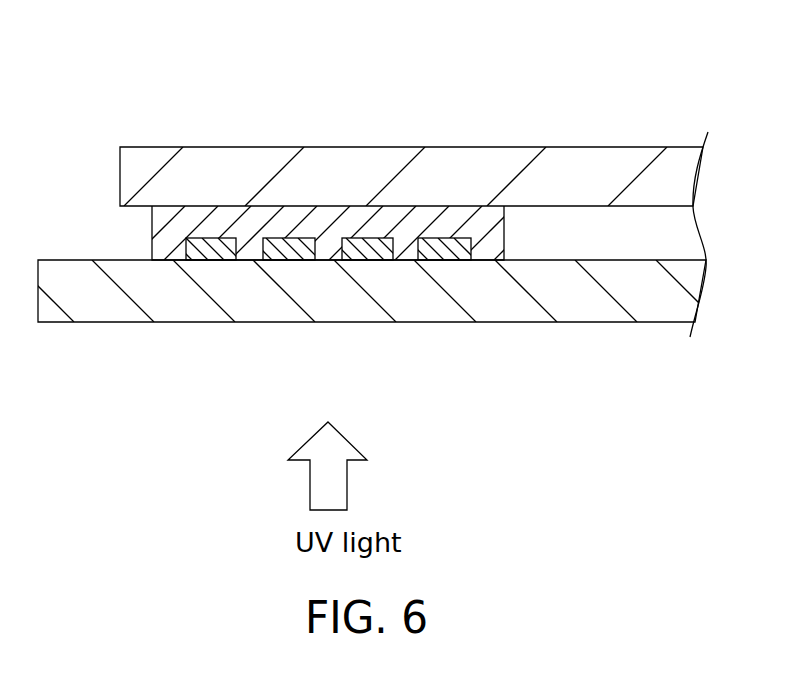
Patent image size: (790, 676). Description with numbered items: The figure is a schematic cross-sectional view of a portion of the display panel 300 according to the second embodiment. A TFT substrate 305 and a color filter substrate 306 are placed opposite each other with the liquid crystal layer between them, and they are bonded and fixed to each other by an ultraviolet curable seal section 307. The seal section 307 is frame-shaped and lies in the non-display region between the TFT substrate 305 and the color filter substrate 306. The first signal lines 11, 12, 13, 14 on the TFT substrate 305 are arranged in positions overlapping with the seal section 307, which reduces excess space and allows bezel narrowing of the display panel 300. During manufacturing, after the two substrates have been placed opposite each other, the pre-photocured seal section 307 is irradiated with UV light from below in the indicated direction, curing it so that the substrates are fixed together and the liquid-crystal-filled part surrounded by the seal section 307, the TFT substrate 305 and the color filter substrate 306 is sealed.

The display panel 300 is at (365, 215).
The color filter substrate 306 is at (468, 157).
The seal section 307 is at (329, 208).
The TFT substrate 305 is at (517, 312).
The first signal line 11 is at (202, 248).
The first signal line 12 is at (283, 248).
The first signal line 13 is at (362, 248).
The first signal line 14 is at (441, 248).